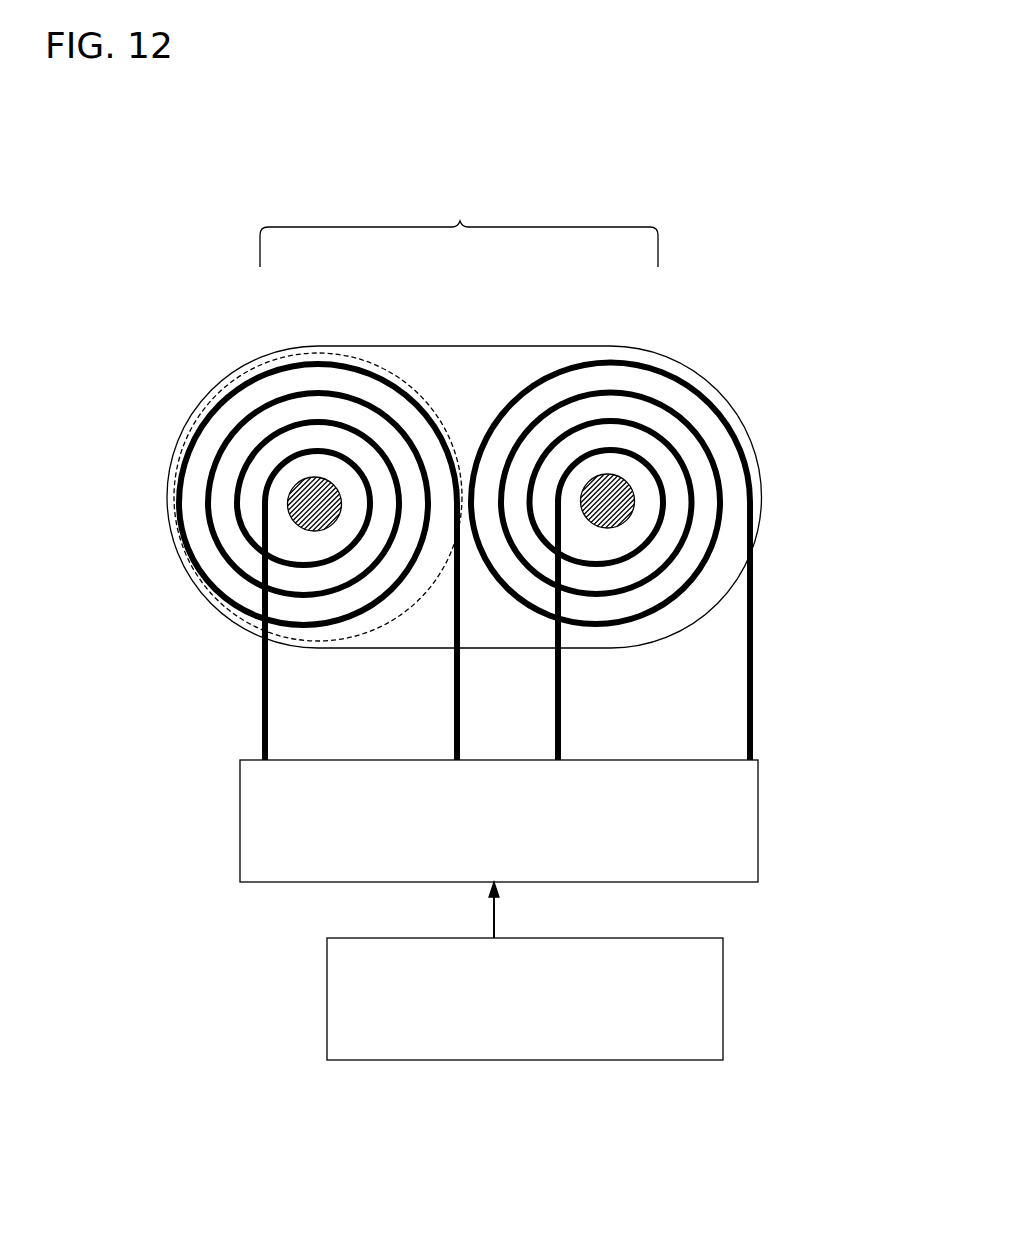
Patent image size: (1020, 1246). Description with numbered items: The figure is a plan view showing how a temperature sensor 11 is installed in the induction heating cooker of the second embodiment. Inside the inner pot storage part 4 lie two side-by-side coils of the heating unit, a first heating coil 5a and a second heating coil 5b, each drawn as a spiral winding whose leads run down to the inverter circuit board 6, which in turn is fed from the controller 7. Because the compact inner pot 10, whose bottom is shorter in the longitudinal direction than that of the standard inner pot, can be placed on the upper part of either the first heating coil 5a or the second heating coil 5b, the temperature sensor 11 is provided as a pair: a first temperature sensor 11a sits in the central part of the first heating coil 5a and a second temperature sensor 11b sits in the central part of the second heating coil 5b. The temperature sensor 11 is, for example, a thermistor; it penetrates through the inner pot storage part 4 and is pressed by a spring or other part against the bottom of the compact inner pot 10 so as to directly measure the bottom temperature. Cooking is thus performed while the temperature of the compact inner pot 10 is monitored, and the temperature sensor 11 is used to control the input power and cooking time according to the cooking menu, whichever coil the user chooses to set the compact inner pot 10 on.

The inner pot storage part 4 is at (703, 380).
The compact inner pot 10 is at (225, 607).
The first heating coil 5a is at (207, 508).
The second heating coil 5b is at (720, 477).
The temperature sensor 11 is at (460, 221).
The first temperature sensor 11a is at (314, 500).
The second temperature sensor 11b is at (608, 498).
The inverter circuit board 6 is at (240, 838).
The controller 7 is at (326, 972).